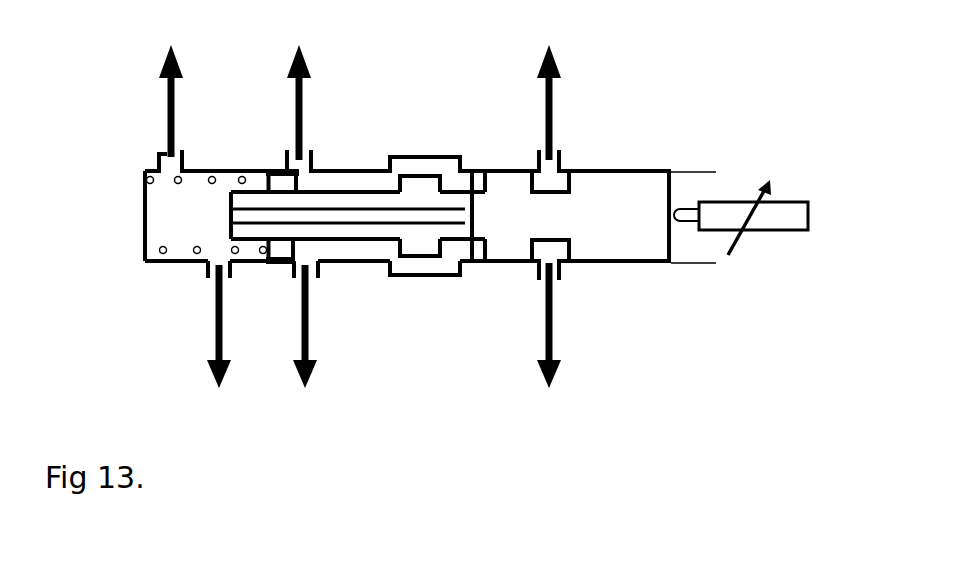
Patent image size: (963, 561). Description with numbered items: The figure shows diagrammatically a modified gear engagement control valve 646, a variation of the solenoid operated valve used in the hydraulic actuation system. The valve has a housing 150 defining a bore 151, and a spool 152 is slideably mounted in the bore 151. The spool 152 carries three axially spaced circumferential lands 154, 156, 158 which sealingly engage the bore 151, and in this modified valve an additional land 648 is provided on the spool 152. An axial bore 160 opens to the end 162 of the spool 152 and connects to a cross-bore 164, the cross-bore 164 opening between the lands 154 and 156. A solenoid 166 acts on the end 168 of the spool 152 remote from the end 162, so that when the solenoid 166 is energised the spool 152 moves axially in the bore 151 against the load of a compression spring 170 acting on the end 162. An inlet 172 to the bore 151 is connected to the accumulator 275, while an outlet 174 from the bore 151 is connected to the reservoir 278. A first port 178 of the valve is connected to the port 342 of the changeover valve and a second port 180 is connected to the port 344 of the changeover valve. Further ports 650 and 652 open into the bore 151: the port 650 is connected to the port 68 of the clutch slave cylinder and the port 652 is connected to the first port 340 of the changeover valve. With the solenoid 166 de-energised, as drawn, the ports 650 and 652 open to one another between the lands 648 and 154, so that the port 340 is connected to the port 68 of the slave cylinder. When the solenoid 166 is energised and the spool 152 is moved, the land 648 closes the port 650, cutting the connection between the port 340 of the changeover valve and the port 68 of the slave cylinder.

The modified gear engagement control valve 646 is at (649, 370).
The bore 151 is at (158, 237).
The compression spring 170 is at (157, 263).
The outlet 174 is at (160, 153).
The reservoir 278 is at (169, 87).
The accumulator 275 is at (297, 88).
The port 68 is at (548, 88).
The port 342 is at (212, 345).
The port 344 is at (302, 345).
The first port 340 is at (545, 344).
The inlet 172 is at (287, 158).
The first port 178 is at (212, 276).
The second port 180 is at (305, 270).
The land 158 is at (277, 263).
The axial bore 160 is at (230, 212).
The end of spool 162 is at (230, 236).
The land 156 is at (410, 187).
The cross-bore 164 is at (466, 207).
The land 154 is at (504, 248).
The port 650 is at (557, 152).
The port 652 is at (560, 267).
The housing 150 is at (597, 167).
The additional land 648 is at (598, 243).
The end of spool 168 is at (673, 247).
The solenoid 166 is at (782, 220).
The spool 152 is at (677, 189).